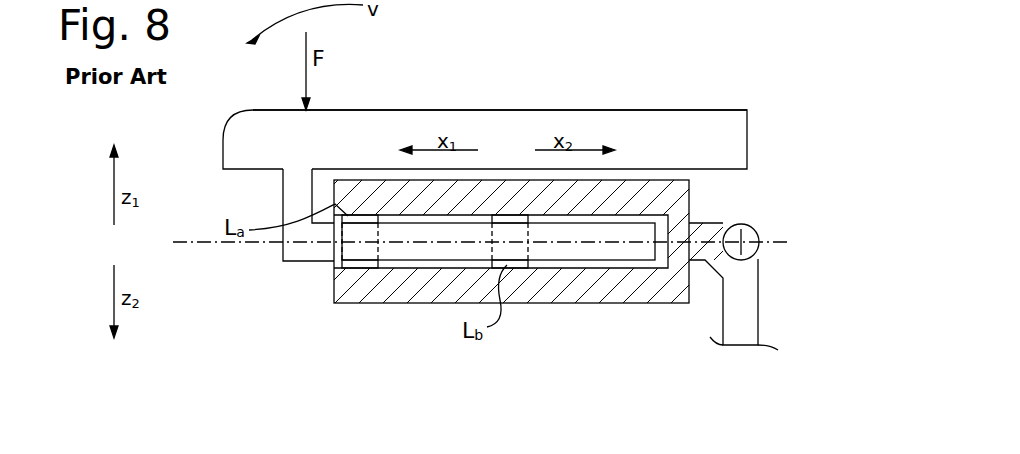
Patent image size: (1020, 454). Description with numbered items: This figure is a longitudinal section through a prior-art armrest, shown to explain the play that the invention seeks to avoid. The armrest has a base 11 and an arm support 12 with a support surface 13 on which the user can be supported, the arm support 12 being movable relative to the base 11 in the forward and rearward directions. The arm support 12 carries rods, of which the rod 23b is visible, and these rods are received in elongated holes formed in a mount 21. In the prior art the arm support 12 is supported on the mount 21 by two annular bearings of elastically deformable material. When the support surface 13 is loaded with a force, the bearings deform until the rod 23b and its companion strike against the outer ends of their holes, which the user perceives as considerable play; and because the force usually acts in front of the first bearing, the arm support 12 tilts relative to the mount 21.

The base 11 is at (706, 306).
The arm support 12 is at (633, 99).
The support surface 13 is at (498, 97).
The mount 21 is at (440, 287).
The rod 23b is at (310, 252).